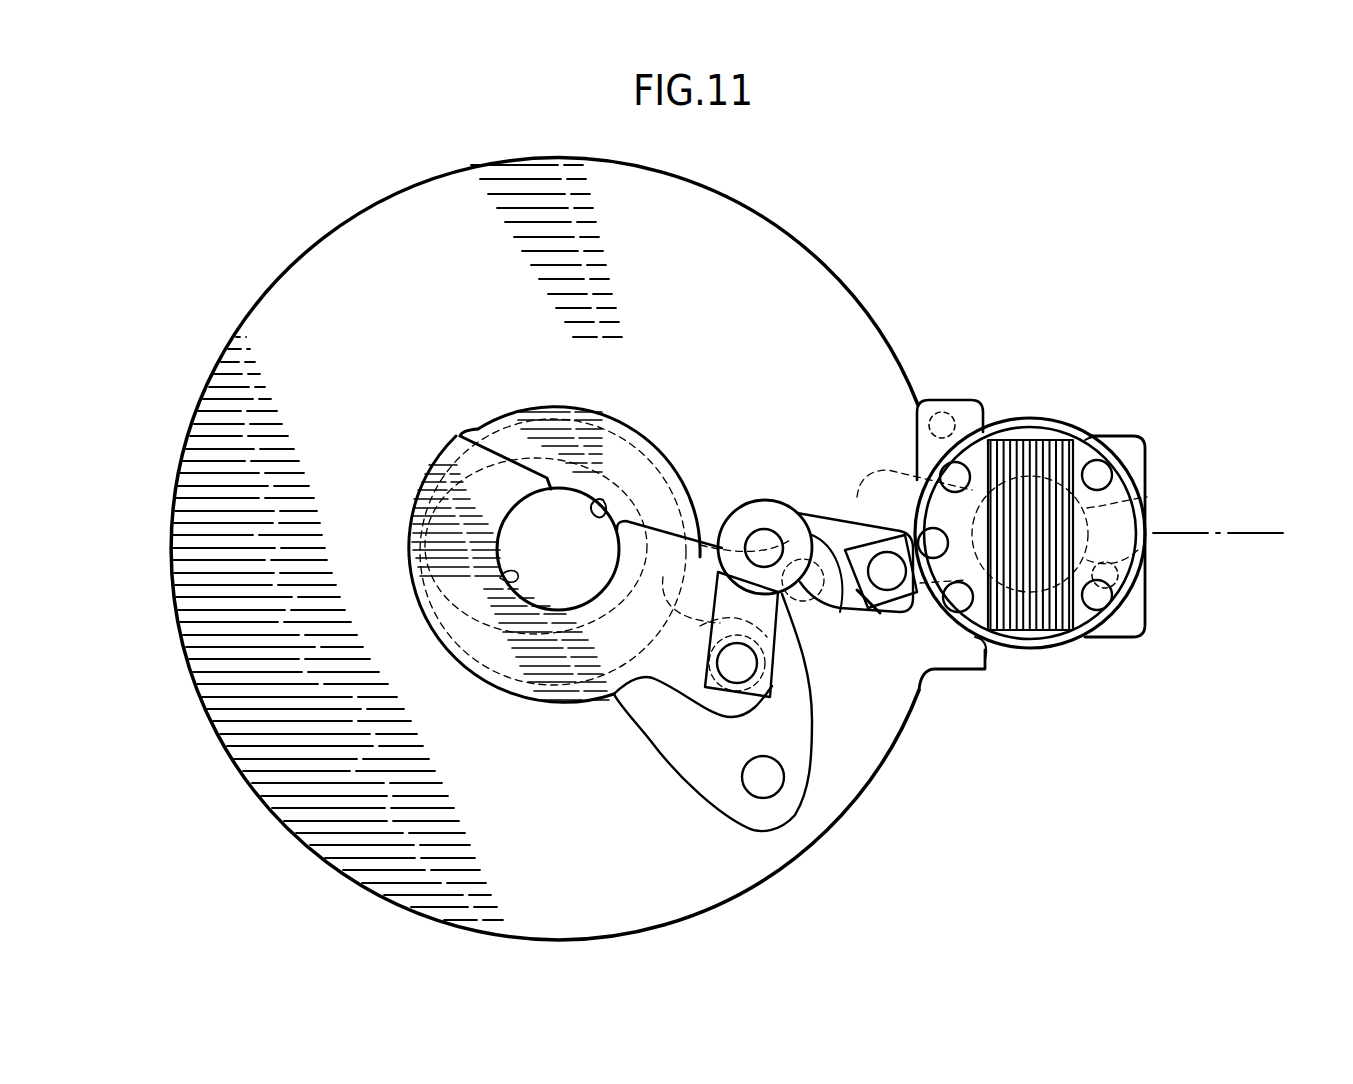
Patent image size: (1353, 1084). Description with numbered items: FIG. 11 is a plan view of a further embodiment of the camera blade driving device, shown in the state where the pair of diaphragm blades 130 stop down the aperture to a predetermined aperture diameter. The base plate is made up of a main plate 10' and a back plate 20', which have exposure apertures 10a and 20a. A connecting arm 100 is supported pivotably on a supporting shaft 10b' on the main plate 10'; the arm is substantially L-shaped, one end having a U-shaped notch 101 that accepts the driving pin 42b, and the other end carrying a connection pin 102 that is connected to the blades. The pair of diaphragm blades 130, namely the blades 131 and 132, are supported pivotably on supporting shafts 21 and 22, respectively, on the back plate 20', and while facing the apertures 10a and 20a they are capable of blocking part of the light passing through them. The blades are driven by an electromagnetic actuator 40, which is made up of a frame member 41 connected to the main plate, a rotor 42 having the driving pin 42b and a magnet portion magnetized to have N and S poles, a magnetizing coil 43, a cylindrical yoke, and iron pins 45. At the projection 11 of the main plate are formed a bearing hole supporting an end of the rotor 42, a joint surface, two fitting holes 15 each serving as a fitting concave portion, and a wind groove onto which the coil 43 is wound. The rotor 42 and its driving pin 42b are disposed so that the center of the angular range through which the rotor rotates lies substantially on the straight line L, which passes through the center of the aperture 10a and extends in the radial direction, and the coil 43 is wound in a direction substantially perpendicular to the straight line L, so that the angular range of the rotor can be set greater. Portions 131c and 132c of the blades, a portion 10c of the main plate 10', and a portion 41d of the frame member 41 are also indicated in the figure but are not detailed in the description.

The main plate 10' is at (559, 549).
The back plate 20' is at (559, 549).
The pair of diaphragm blades 130 is at (437, 632).
The diaphragm blade 131 is at (529, 560).
The diaphragm blade 132 is at (525, 410).
The collar hook portion 131c is at (512, 575).
The collar notch 132c is at (603, 500).
The exposure aperture 10a is at (592, 483).
The exposure aperture 20a is at (598, 460).
The connecting arm 100 is at (760, 530).
The supporting shaft 10b' is at (808, 513).
The hidden link portion 10c is at (853, 490).
The U-shaped notch 101 is at (886, 500).
The bracket hole 41d is at (1098, 462).
The fitting holes 15 is at (945, 412).
The iron pins 45 is at (957, 464).
The electromagnetic actuator 40 is at (1042, 405).
The rotor 42 is at (1147, 497).
The projection 11 is at (1146, 448).
The magnetizing coil 43 is at (1103, 436).
The frame member 41 is at (1120, 543).
The straight line L is at (1240, 528).
The supporting shaft 21 is at (807, 600).
The driving pin 42b is at (890, 578).
The connection pin 102 is at (793, 600).
The supporting shaft 22 is at (780, 798).